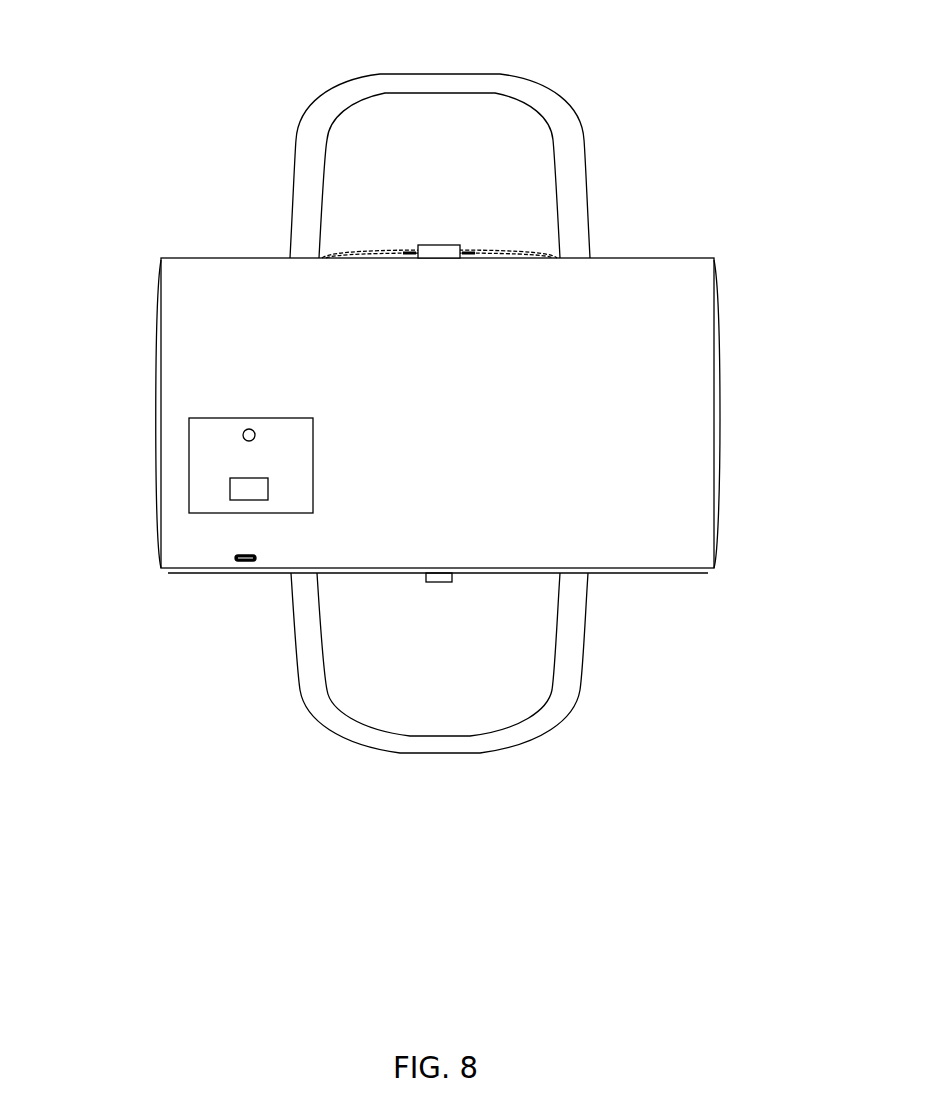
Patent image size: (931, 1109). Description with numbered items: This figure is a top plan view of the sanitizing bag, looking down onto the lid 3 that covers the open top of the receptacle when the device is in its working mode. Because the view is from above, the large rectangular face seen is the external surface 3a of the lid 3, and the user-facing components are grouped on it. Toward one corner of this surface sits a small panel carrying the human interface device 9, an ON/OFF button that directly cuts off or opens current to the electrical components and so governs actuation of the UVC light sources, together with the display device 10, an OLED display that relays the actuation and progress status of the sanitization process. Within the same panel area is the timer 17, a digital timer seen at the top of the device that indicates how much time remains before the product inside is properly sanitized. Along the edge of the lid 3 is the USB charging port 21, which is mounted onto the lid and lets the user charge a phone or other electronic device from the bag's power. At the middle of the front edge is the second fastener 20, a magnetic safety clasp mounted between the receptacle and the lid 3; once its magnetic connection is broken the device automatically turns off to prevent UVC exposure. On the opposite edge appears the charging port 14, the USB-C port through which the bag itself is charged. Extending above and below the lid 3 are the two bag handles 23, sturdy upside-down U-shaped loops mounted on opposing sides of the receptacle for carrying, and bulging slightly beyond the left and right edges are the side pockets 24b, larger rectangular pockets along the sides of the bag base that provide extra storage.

The lid 3 is at (693, 266).
The external surface 3a is at (700, 316).
The human interface device 9 is at (247, 429).
The display device 10 is at (302, 452).
The charging port 14 is at (440, 579).
The timer 17 is at (258, 494).
The second fastener 20 is at (440, 252).
The USB charging port 21 is at (240, 562).
The bag handles 23 is at (452, 79).
The side pockets 24b is at (156, 434).